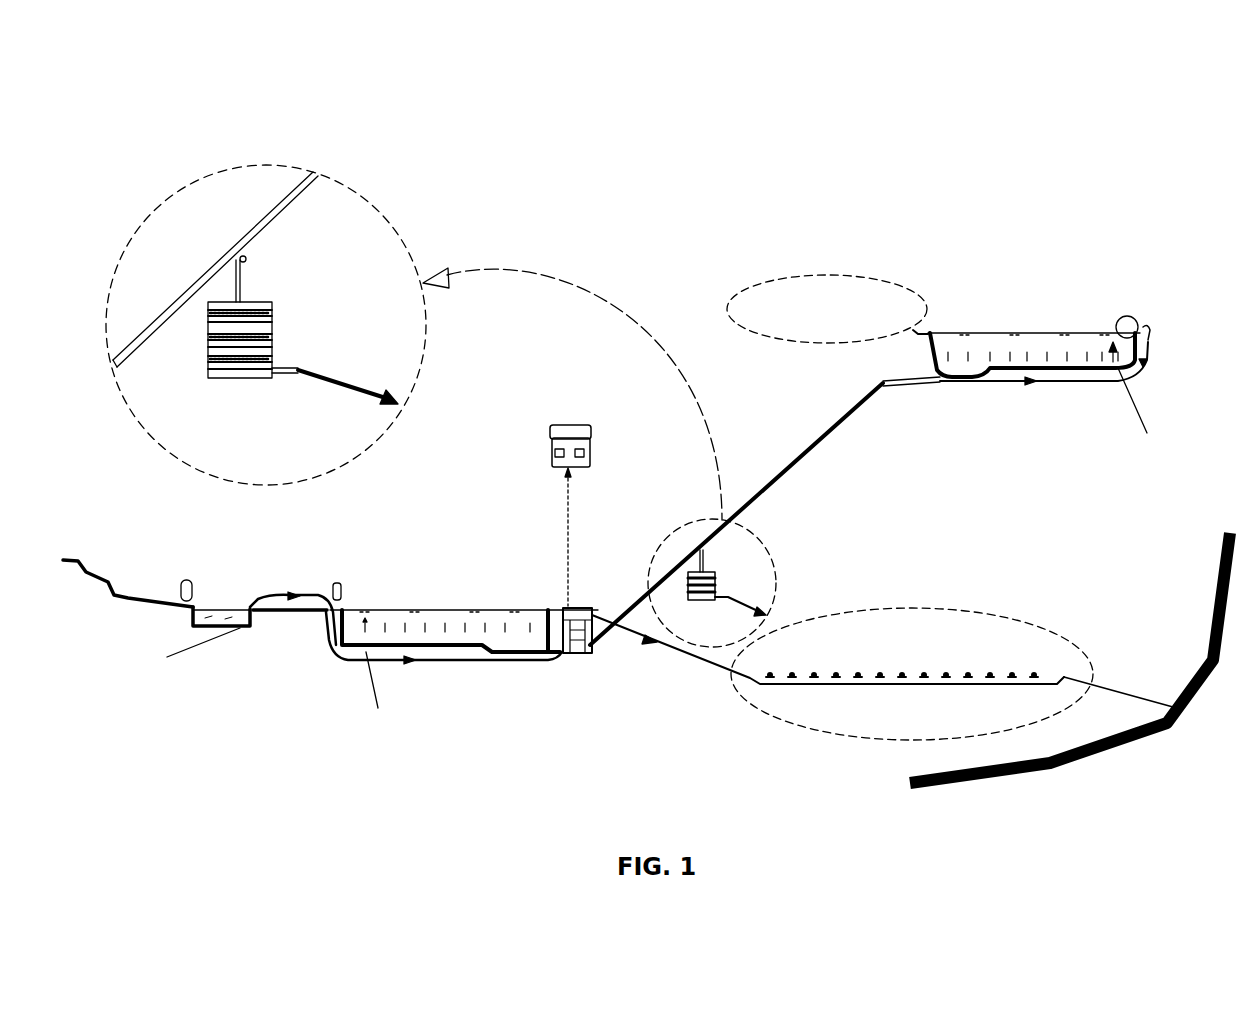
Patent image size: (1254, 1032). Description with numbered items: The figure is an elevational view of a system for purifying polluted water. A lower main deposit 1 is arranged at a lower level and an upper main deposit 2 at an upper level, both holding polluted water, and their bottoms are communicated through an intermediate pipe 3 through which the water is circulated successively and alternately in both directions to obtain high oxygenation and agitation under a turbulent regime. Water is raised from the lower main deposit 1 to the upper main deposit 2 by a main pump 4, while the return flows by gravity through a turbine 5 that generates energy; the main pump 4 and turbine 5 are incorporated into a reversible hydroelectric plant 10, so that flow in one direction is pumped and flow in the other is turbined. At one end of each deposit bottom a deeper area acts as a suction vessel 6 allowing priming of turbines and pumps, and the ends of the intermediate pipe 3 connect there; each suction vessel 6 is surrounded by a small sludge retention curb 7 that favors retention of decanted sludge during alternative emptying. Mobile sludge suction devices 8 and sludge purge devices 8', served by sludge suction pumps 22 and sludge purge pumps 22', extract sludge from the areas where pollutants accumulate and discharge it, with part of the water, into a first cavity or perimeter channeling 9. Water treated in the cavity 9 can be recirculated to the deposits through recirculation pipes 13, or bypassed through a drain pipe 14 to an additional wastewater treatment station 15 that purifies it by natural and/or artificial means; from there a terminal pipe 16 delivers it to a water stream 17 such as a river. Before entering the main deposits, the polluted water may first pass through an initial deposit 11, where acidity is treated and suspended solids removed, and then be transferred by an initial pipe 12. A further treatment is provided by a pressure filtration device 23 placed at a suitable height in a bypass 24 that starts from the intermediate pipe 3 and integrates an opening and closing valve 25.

The lower main deposit 1 is at (450, 600).
The upper main deposit 2 is at (1042, 326).
The intermediate pipe 3 is at (736, 514).
The main pump 4 is at (552, 450).
The turbine 5 is at (583, 452).
The suction vessel 6 is at (522, 657).
The sludge retention curb 7 is at (488, 650).
The sludge suction devices 8 is at (742, 457).
The sludge purge devices 8' is at (690, 538).
The first cavity or perimeter channeling 9 is at (333, 655).
The reversible hydroelectric plant 10 is at (552, 461).
The initial deposit 11 is at (224, 596).
The initial pipe 12 is at (302, 613).
The recirculation pipes 13 is at (565, 612).
The drain pipe 14 is at (662, 655).
The additional wastewater treatment station 15 is at (782, 277).
The terminal pipe 16 is at (1123, 693).
The water stream 17 is at (1158, 732).
The sludge suction pumps 22 is at (657, 552).
The sludge purge pumps 22' is at (570, 550).
The pressure filtration device 23 is at (262, 304).
The bypass 24 is at (243, 278).
The opening and closing valve 25 is at (238, 257).